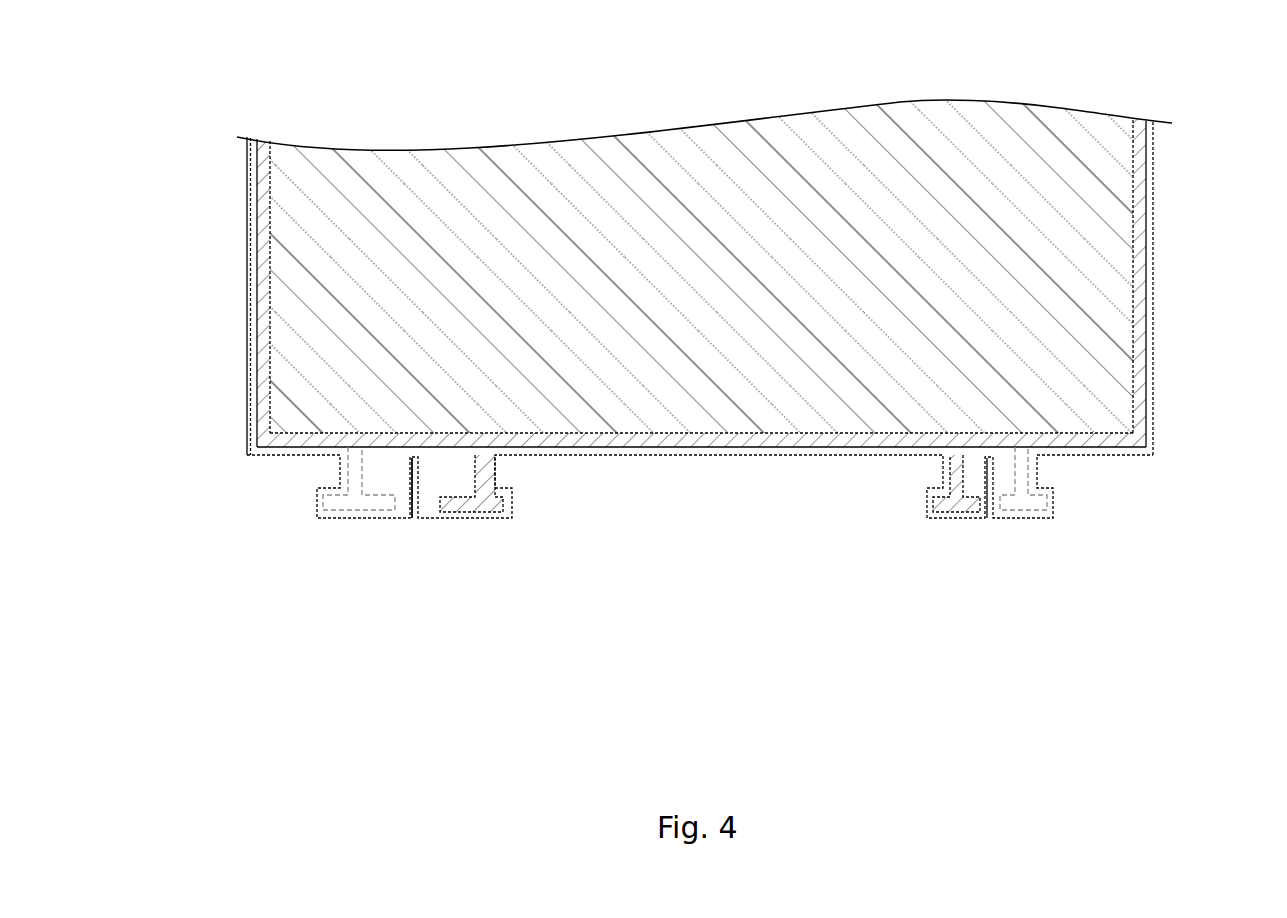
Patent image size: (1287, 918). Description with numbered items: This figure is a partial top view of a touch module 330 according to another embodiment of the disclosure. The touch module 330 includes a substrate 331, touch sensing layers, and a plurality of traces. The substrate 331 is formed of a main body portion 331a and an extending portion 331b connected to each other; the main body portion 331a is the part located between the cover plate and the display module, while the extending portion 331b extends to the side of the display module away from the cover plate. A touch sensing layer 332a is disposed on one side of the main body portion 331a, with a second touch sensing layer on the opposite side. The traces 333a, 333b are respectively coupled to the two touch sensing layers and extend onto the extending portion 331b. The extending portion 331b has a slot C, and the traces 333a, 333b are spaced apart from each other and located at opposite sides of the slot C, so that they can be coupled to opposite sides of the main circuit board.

The touch module 330 is at (185, 46).
The substrate 331 is at (175, 373).
The main body portion 331a is at (247, 393).
The extending portion 331b is at (316, 490).
The touch sensing layer 332a is at (1106, 250).
The trace 333a is at (460, 512).
The trace 333b is at (342, 512).
The slot C is at (410, 540).